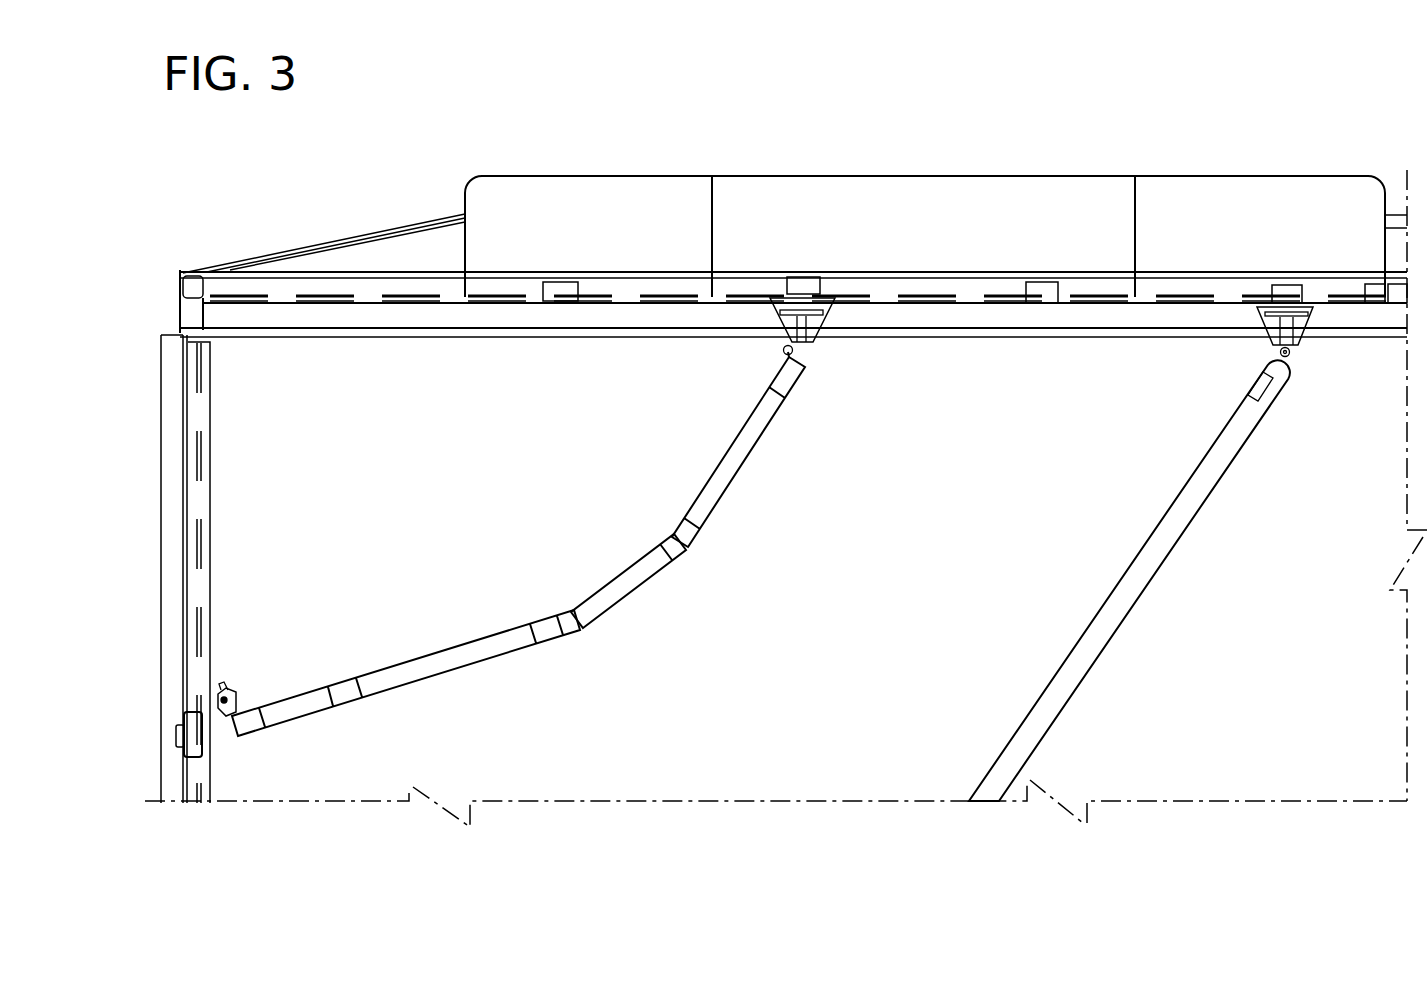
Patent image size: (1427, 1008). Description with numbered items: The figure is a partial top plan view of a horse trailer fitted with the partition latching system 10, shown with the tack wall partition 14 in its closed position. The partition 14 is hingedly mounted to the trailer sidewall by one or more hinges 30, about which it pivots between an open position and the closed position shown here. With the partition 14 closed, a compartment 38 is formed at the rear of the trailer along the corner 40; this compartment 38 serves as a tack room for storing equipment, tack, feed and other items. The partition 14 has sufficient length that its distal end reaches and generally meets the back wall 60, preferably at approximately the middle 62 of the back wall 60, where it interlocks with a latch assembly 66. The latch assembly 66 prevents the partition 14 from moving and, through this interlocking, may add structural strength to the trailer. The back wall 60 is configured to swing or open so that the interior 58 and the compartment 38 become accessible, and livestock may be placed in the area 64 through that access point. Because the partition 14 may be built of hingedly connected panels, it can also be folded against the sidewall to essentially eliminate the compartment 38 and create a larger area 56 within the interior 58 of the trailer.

The partition latching system 10 is at (253, 675).
The partition 14 is at (640, 608).
The hinges 30 is at (833, 347).
The compartment 38 is at (288, 463).
The corner 40 is at (247, 367).
The larger area 56 is at (548, 731).
The interior 58 is at (1040, 290).
The back wall 60 is at (175, 567).
The middle of back wall 62 is at (180, 737).
The area 64 is at (893, 692).
The latch assembly 66 is at (262, 730).